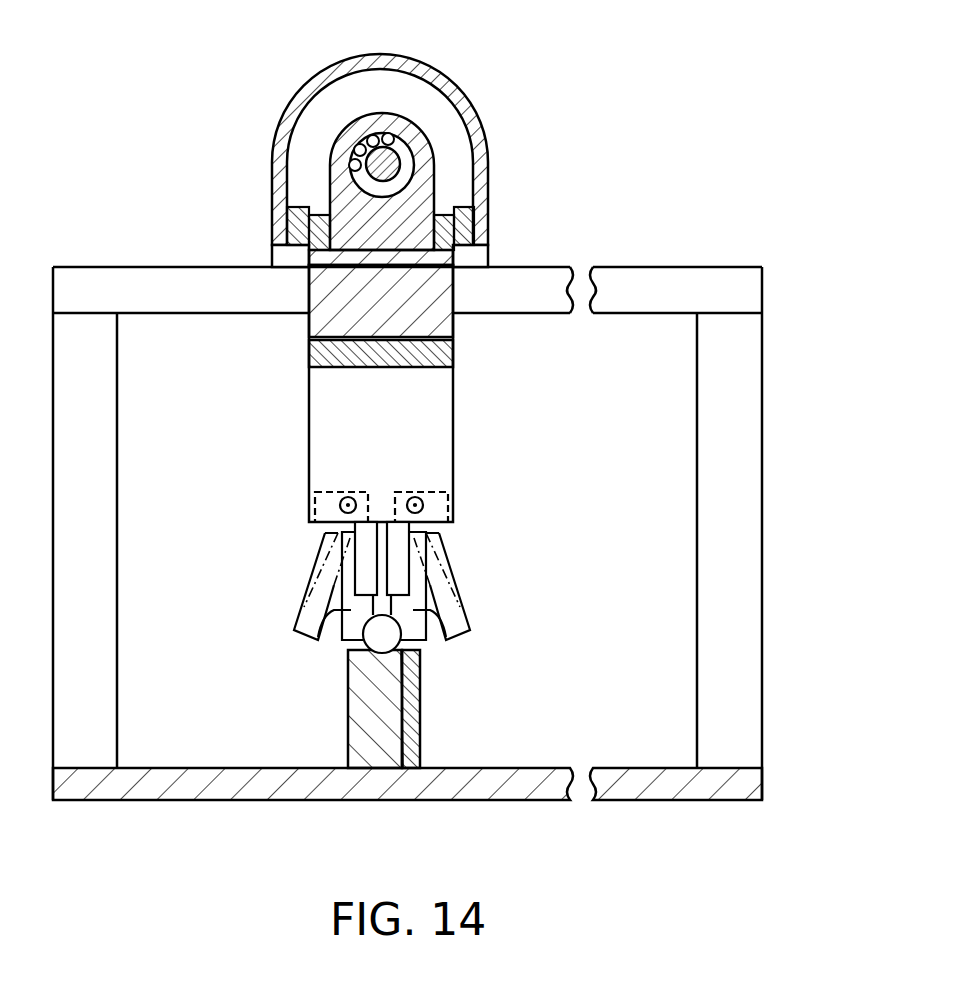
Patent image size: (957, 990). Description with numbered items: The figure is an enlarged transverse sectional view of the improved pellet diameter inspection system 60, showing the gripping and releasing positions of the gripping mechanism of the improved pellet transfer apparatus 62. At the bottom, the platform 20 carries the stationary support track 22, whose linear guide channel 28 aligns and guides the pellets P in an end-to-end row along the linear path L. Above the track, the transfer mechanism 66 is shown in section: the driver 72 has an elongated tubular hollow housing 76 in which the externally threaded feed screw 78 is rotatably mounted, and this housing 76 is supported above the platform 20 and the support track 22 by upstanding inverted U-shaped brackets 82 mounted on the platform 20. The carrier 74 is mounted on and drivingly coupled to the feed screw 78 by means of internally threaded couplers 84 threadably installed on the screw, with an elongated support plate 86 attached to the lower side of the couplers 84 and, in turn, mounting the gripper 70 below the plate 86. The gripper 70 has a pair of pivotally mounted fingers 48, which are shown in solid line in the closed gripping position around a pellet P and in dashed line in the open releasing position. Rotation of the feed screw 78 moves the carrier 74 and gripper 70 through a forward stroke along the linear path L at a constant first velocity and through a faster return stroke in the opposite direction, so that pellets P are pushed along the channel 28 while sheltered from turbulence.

The platform 20 is at (300, 800).
The support track 22 is at (420, 712).
The linear guide channel 28 is at (403, 800).
The fingers 48 is at (351, 610).
The pellet diameter inspection system 60 is at (576, 202).
The pellet transfer apparatus 62 is at (263, 246).
The transfer mechanism 66 is at (500, 421).
The gripper 70 is at (455, 469).
The driver 72 is at (444, 53).
The carrier 74 is at (309, 345).
The housing 76 is at (463, 108).
The feed screw 78 is at (388, 152).
The inverted U-shaped brackets 82 is at (648, 267).
The couplers 84 is at (434, 188).
The support plate 86 is at (455, 325).
The pellets P is at (365, 647).
The linear path L is at (399, 647).